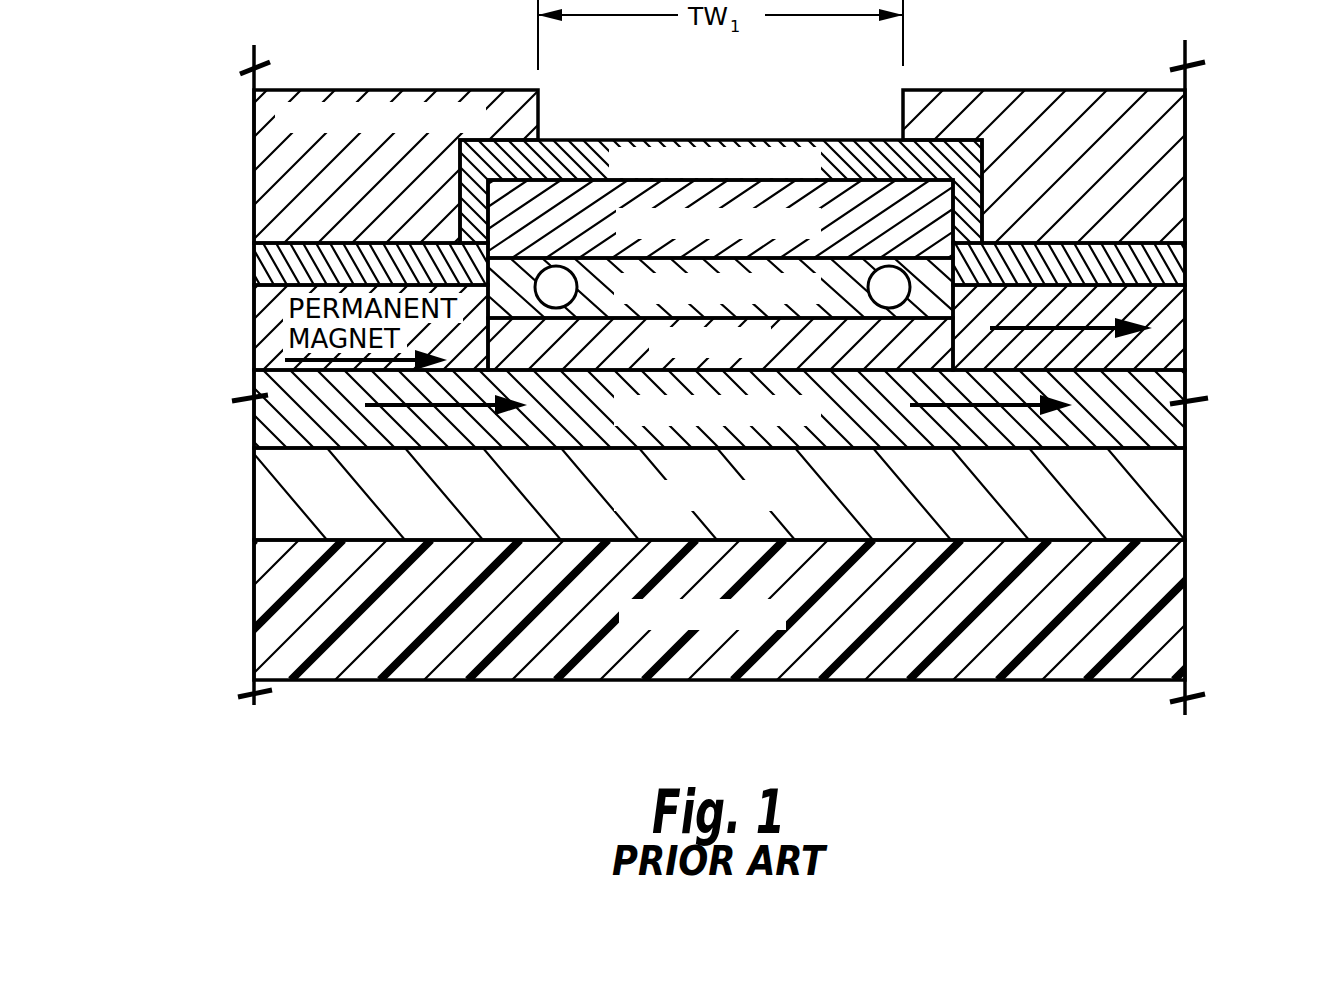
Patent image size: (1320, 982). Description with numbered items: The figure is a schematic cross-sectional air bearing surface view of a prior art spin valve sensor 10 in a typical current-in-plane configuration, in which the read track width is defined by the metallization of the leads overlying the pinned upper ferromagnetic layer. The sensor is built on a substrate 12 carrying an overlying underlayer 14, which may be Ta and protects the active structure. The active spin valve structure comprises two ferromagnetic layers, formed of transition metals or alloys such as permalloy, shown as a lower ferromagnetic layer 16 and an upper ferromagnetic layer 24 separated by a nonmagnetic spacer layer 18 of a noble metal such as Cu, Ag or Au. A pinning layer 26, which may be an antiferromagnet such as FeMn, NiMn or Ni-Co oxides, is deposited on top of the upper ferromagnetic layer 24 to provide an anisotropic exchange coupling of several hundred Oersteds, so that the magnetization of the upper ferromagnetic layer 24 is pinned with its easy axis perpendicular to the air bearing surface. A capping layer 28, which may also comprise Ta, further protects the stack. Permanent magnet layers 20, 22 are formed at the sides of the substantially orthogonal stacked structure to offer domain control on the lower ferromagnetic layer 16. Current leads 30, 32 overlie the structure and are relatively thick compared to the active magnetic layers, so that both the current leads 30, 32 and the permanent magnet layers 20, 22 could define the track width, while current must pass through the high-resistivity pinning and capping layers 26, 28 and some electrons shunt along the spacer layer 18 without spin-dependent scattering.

The spin valve sensor 10 is at (853, 767).
The substrate 12 is at (458, 683).
The underlayer 14 is at (437, 545).
The lower ferromagnetic layer 16 is at (395, 450).
The spacer layer 18 is at (953, 340).
The permanent magnet layer 20 is at (365, 282).
The permanent magnet layer 22 is at (1177, 282).
The upper ferromagnetic layer 24 is at (953, 278).
The pinning layer 26 is at (957, 202).
The capping layer 28 is at (1070, 243).
The current lead 30 is at (302, 90).
The current lead 32 is at (1133, 88).